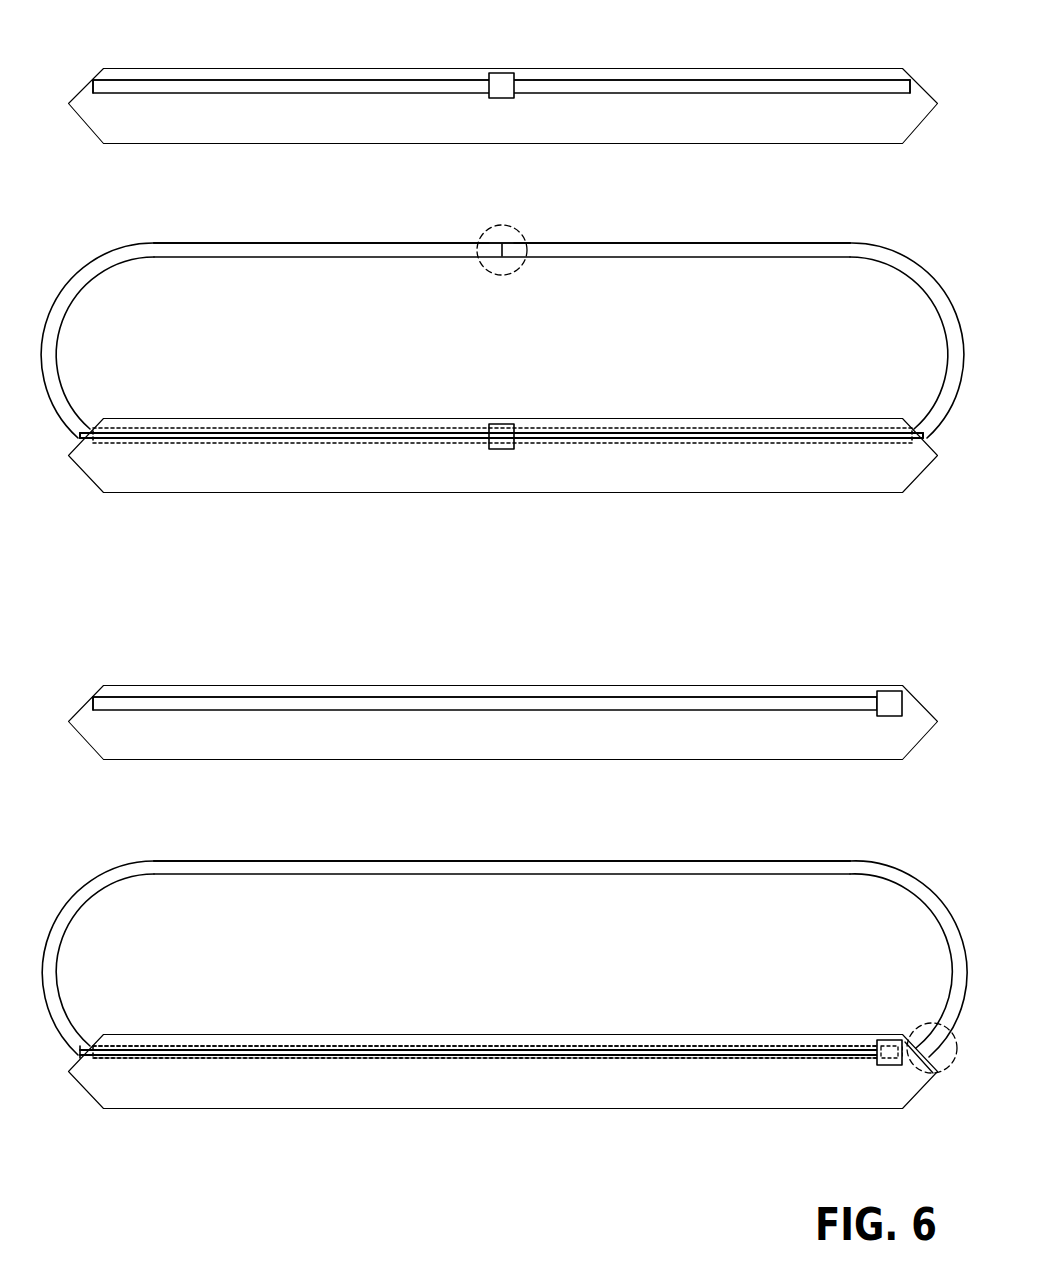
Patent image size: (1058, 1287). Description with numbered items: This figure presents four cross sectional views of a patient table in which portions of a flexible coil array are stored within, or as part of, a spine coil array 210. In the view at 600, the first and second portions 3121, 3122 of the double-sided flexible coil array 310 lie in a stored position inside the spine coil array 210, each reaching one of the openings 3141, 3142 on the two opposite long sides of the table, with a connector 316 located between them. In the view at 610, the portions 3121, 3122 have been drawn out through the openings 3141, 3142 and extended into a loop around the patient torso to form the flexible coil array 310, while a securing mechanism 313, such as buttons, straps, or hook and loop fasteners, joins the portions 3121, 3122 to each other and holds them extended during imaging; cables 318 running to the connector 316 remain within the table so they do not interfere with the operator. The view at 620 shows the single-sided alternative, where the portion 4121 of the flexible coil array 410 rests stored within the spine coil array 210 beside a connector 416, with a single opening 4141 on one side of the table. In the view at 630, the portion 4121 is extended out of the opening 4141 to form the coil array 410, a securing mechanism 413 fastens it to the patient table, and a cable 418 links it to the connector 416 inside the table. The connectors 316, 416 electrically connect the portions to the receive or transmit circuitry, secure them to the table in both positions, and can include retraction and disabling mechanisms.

The stored position view of double-sided flexible coil array 600 is at (743, 33).
The extended position view of double-sided flexible coil array 610 is at (845, 226).
The stored position view of single-sided flexible coil array 620 is at (745, 652).
The extended position view of single-sided flexible coil array 630 is at (845, 850).
The spine coil array 210 is at (371, 108).
The first example flexible coil array 310 is at (643, 286).
The first portion of flexible coil array 3121 is at (318, 243).
The second portion of flexible coil array 3122 is at (750, 243).
The securing mechanism 313 is at (502, 276).
The first opening 3141 is at (82, 82).
The second opening 3142 is at (920, 430).
The connector 316 is at (500, 98).
The cable 318 is at (352, 438).
The second example flexible coil array 410 is at (643, 903).
The portion of single-sided flexible coil array 4121 is at (335, 861).
The securing mechanism 413 is at (922, 1030).
The opening 4141 is at (82, 697).
The connector 416 is at (890, 716).
The cable 418 is at (375, 1056).